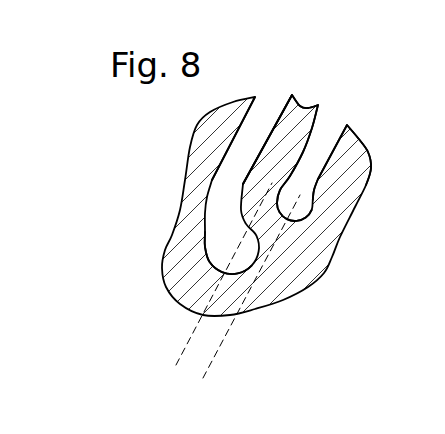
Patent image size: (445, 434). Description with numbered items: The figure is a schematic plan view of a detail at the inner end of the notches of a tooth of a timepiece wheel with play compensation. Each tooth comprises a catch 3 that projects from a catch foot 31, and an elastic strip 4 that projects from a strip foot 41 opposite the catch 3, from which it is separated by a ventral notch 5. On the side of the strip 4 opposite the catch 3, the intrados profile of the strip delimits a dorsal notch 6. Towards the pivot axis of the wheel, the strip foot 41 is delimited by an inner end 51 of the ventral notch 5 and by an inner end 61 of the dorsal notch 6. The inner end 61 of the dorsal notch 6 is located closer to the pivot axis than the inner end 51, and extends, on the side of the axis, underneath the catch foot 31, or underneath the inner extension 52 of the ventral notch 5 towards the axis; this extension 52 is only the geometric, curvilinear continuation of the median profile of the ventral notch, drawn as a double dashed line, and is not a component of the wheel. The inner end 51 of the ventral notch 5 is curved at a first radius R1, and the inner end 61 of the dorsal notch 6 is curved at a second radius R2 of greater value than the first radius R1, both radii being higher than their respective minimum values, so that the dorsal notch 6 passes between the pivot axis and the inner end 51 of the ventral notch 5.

The catch 3 is at (208, 143).
The elastic strip 4 is at (317, 107).
The ventral notch 5 is at (318, 131).
The dorsal notch 6 is at (259, 115).
The catch foot 31 is at (318, 218).
The strip foot 41 is at (295, 283).
The inner end of ventral notch 51 is at (287, 208).
The inner end of dorsal notch 61 is at (224, 263).
The inner extension of ventral notch 52 is at (211, 327).
The first radius R1 is at (302, 221).
The second radius R2 is at (233, 243).